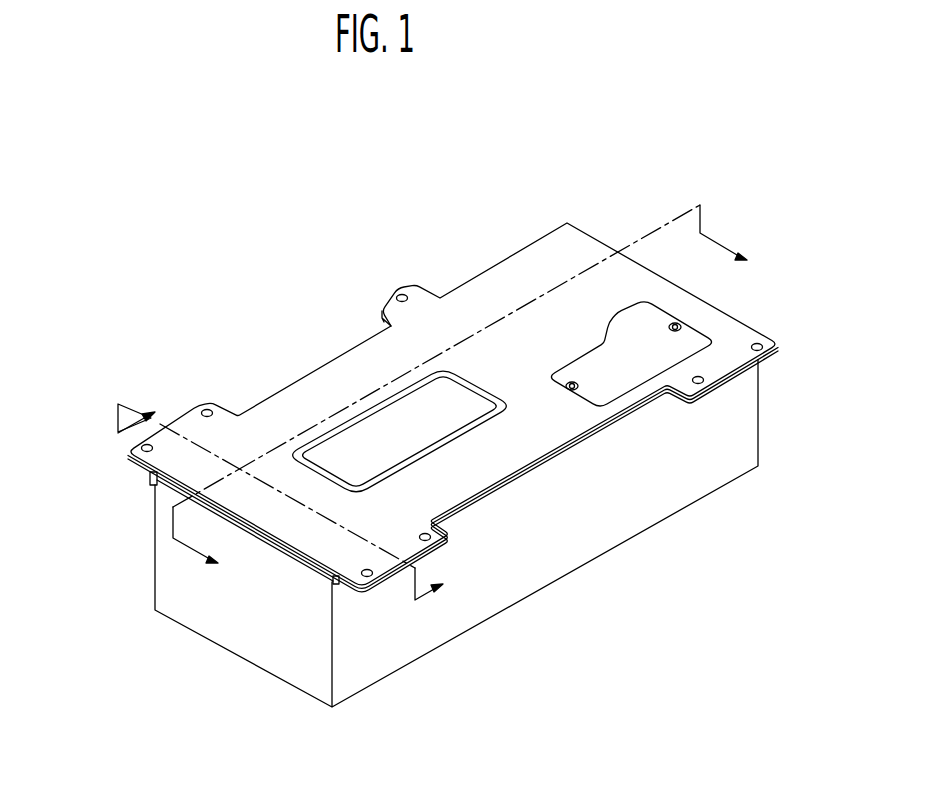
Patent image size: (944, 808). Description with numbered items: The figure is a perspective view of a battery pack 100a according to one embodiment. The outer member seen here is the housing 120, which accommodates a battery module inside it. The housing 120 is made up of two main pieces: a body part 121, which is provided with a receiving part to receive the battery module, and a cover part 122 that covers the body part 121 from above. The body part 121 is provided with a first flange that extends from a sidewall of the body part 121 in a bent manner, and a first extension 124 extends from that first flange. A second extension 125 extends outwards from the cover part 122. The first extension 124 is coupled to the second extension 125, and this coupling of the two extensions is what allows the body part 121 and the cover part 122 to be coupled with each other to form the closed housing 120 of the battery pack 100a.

The battery pack 100a is at (168, 166).
The housing 120 is at (52, 592).
The body part 121 is at (162, 636).
The cover part 122 is at (248, 395).
The first extension 124 is at (378, 588).
The second extension 125 is at (443, 548).